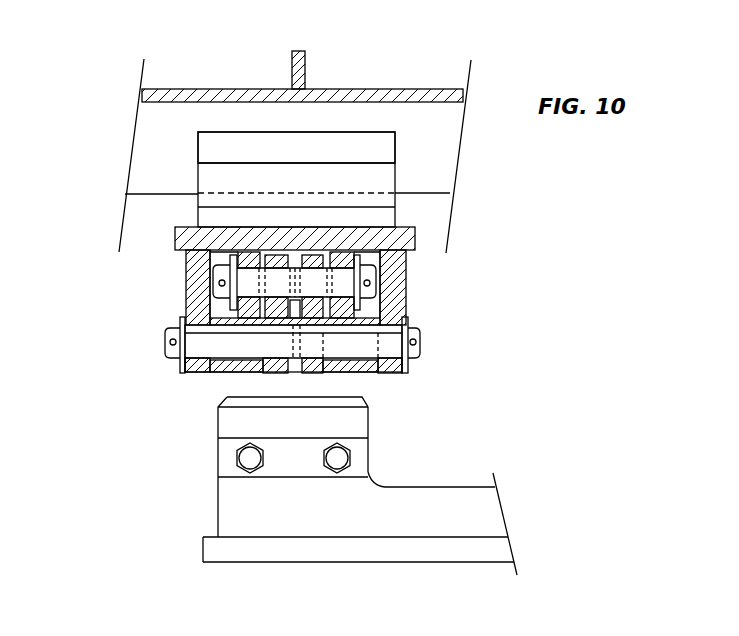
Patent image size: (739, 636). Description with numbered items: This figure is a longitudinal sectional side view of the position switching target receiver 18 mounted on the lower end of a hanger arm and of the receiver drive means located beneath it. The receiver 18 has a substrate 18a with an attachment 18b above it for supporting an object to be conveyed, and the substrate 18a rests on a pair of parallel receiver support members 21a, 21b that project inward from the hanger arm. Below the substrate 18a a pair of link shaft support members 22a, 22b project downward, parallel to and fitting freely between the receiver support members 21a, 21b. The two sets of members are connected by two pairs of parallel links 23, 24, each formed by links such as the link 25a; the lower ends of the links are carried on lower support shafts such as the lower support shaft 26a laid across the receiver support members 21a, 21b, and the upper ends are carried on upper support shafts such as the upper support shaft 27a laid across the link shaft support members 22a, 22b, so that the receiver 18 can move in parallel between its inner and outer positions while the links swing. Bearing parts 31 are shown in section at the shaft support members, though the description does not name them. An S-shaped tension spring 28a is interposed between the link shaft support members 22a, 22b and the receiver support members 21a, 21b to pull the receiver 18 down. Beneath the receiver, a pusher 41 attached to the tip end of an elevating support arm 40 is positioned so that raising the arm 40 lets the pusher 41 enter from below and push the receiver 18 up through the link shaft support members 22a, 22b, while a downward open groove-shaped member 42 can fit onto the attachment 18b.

The position switching target receiver 18 is at (365, 132).
The substrate 18a is at (418, 228).
The attachment for supporting an object to be conveyed 18b is at (237, 147).
The groove-shaped member 42 is at (423, 96).
The bearings 31 is at (317, 258).
The link shaft support member 22a is at (247, 257).
The link shaft support member 22b is at (343, 258).
The upper support shaft 27a is at (192, 266).
The receiver support member 21a is at (186, 293).
The receiver support member 21b is at (393, 287).
The link 25a is at (188, 310).
The lower support shaft 26a is at (392, 347).
The tension spring 28a is at (290, 338).
The parallel link 23 is at (277, 374).
The parallel link 24 is at (312, 374).
The pusher 41 is at (290, 422).
The elevating support arm 40 is at (497, 551).